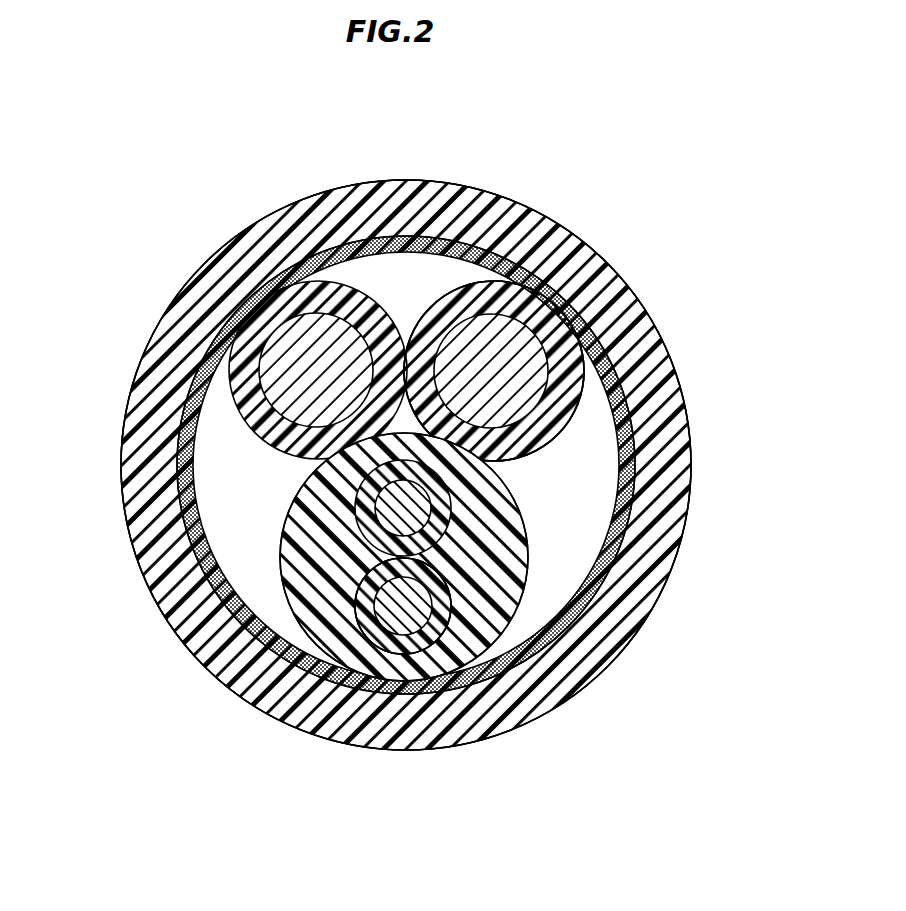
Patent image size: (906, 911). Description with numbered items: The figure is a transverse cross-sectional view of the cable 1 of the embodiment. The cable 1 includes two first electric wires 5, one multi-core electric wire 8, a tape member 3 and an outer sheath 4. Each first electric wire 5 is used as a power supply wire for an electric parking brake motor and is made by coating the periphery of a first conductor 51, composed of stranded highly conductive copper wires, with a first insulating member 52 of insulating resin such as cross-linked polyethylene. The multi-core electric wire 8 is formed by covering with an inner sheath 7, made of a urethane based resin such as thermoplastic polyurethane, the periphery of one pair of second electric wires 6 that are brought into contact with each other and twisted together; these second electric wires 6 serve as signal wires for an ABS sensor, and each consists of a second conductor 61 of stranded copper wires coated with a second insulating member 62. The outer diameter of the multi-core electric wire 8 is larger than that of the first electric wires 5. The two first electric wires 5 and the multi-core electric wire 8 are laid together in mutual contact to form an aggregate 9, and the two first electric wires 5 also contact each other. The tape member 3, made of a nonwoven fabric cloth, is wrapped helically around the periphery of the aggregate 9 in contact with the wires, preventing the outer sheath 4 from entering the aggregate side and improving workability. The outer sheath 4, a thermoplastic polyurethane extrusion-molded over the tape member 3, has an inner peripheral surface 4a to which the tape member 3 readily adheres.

The cable 1 is at (628, 161).
The tape member 3 is at (634, 480).
The outer sheath 4 is at (636, 397).
The inner peripheral surface of the outer sheath 4a is at (531, 653).
The first electric wire 5 is at (226, 371).
The first conductor 51 is at (556, 332).
The first insulating member 52 is at (551, 365).
The second electric wire 6 is at (353, 540).
The second conductor 61 is at (385, 630).
The second insulating member 62 is at (422, 635).
The inner sheath 7 is at (527, 546).
The multi-core electric wire 8 is at (535, 560).
The aggregate 9 is at (272, 475).